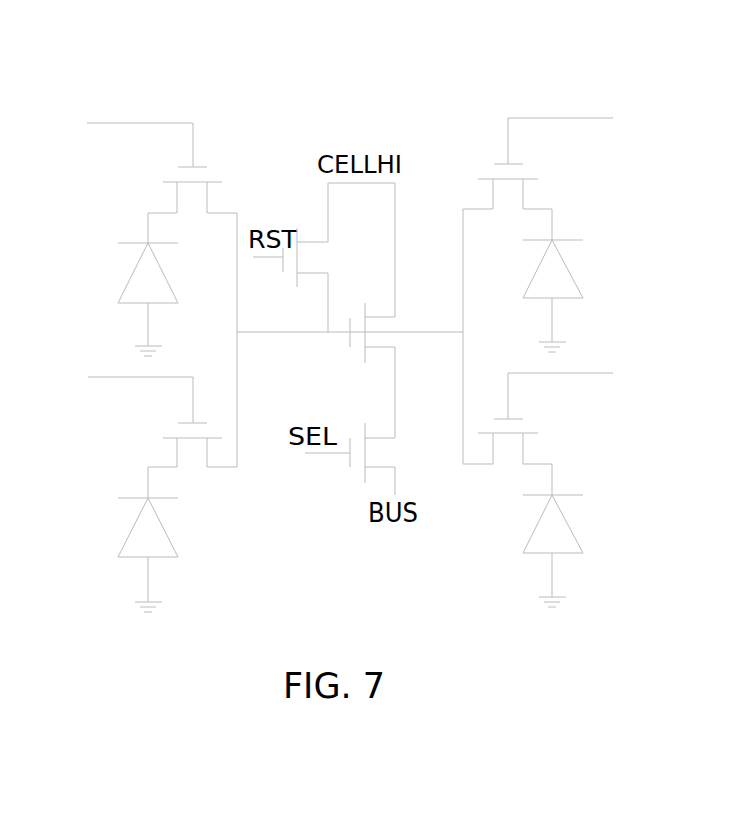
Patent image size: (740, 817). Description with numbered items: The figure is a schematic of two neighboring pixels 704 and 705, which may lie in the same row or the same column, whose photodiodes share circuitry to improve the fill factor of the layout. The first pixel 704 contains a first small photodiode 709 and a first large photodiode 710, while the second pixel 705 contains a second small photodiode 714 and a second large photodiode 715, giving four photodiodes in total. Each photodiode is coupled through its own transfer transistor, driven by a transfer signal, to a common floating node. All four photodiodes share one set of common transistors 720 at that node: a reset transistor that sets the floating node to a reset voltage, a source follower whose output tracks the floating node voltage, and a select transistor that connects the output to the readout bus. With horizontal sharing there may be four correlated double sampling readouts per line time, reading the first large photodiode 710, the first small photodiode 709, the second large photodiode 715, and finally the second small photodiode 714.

The neighboring pixel 704 is at (139, 318).
The neighboring pixel 705 is at (563, 310).
The small photodiode Dsmall1 709 is at (122, 290).
The large photodiode Dlarge1 710 is at (122, 550).
The small photodiode Dsmall2 714 is at (582, 298).
The large photodiode Dlarge2 715 is at (582, 553).
The set of common transistors 720 is at (350, 377).